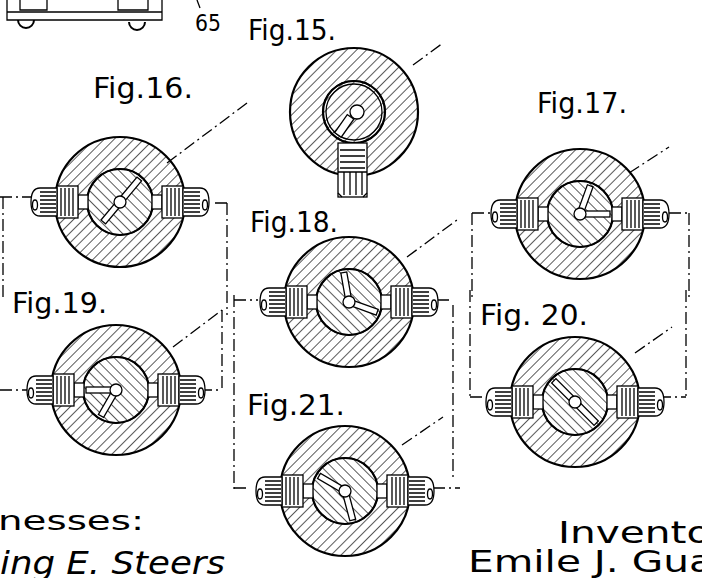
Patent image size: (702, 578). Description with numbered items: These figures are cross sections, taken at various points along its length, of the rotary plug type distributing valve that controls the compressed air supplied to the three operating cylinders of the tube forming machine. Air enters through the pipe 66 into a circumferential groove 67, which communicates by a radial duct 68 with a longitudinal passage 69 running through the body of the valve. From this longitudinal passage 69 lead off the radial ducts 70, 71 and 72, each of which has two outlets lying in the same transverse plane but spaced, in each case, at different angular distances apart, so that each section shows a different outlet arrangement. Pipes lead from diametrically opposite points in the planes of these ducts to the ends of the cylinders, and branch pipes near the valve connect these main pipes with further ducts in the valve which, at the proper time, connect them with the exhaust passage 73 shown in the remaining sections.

In FIG. 15, the pipe 66 is at (338, 186).
In FIG. 15, the circumferential groove 67 is at (333, 107).
In FIG. 15, the radial duct 68 is at (340, 135).
In FIG. 15, the longitudinal passage 69 is at (360, 114).
In FIG. 16, the longitudinal passage 69 is at (112, 228).
In FIG. 17, the longitudinal passage 69 is at (565, 247).
In FIG. 18, the longitudinal passage 69 is at (350, 308).
In FIG. 16, the radial duct 70 is at (137, 223).
In FIG. 18, the radial duct 71 is at (377, 312).
In FIG. 17, the radial duct 72 is at (589, 190).
In FIG. 19, the exhaust passage 73 is at (127, 420).
In FIG. 20, the exhaust passage 73 is at (575, 408).
In FIG. 21, the exhaust passage 73 is at (373, 470).